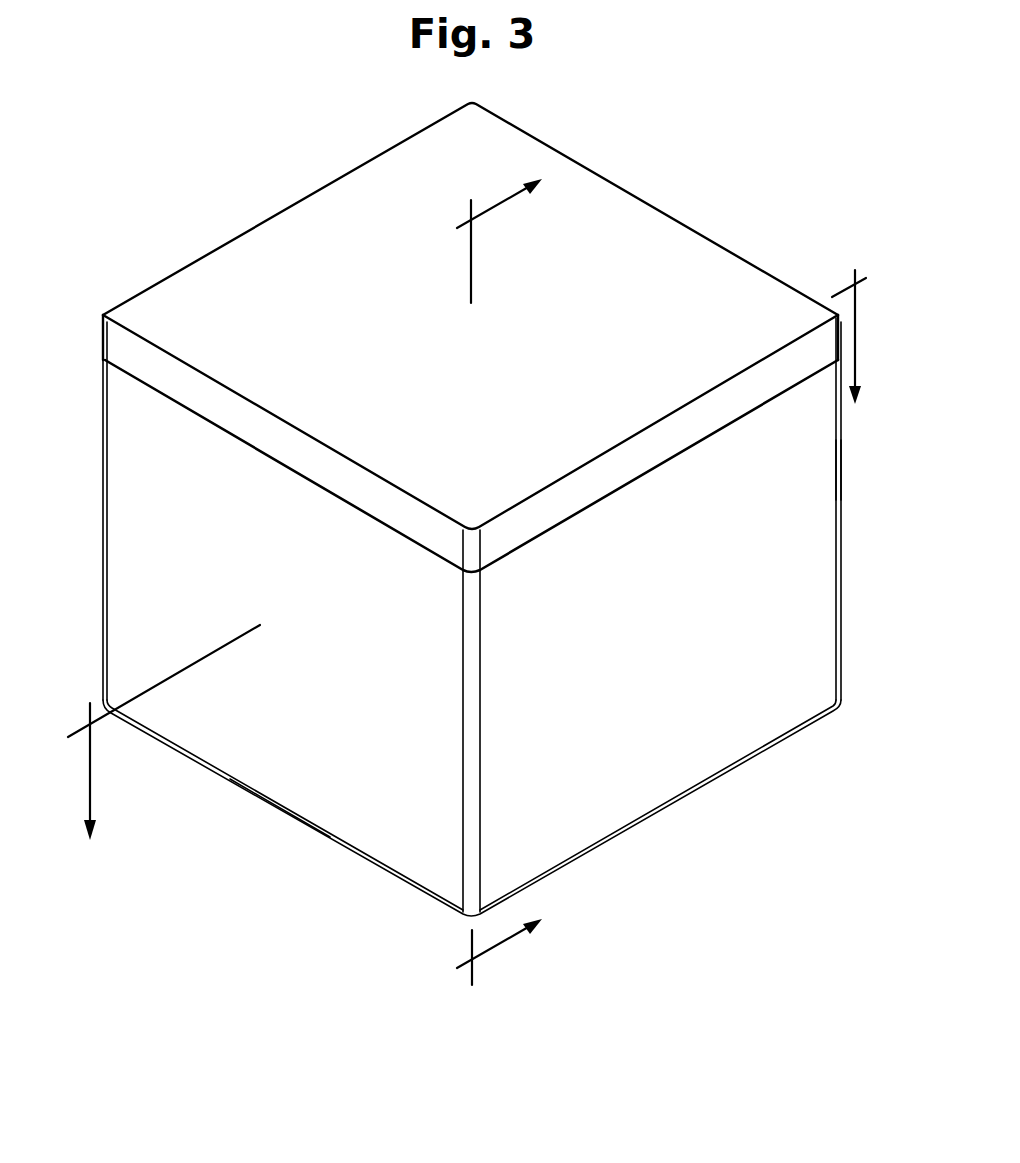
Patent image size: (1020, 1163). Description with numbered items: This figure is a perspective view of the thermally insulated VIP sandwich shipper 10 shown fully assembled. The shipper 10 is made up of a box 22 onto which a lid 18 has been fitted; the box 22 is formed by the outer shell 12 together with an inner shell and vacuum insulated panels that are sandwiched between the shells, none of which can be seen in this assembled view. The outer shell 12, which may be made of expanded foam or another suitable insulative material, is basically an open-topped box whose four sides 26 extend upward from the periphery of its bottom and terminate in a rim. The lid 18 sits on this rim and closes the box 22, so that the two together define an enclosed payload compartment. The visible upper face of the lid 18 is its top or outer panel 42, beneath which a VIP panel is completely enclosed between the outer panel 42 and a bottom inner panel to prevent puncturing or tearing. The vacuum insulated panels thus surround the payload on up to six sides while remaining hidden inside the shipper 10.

The thermally insulated VIP sandwich shipper 10 is at (476, 552).
The outer shell 12 is at (808, 560).
The lid 18 is at (470, 337).
The box 22 is at (736, 740).
The sides 26 is at (818, 472).
The top panel 42 is at (618, 222).